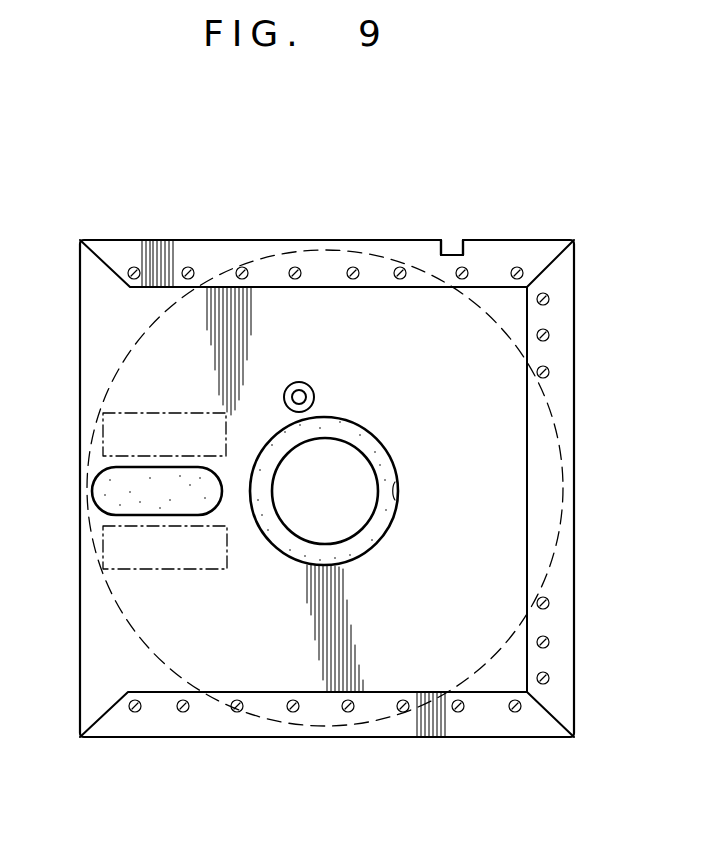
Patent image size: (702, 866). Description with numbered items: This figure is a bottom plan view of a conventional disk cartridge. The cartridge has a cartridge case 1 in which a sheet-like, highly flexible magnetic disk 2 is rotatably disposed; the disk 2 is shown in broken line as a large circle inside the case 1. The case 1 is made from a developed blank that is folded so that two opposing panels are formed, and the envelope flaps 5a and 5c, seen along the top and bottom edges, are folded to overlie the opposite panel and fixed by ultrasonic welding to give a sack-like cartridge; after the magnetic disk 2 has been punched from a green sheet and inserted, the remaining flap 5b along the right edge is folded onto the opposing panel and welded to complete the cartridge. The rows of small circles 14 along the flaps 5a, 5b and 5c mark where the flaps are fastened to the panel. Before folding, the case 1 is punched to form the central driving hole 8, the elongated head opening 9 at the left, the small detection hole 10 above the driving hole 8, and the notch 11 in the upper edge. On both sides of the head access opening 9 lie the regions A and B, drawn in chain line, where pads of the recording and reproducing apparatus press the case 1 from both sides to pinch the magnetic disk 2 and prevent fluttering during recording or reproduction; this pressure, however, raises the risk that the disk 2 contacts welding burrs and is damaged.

The cartridge case 1 is at (96, 325).
The magnetic disk 2 is at (125, 628).
The envelope flap 5a is at (215, 254).
The flap 5b is at (556, 403).
The envelope flap 5c is at (226, 724).
The driving hole 8 is at (396, 494).
The head opening 9 is at (108, 512).
The detection hole 10 is at (315, 393).
The notch 11 is at (450, 250).
The screws 14 is at (353, 266).
The region A is at (178, 413).
The region B is at (142, 570).